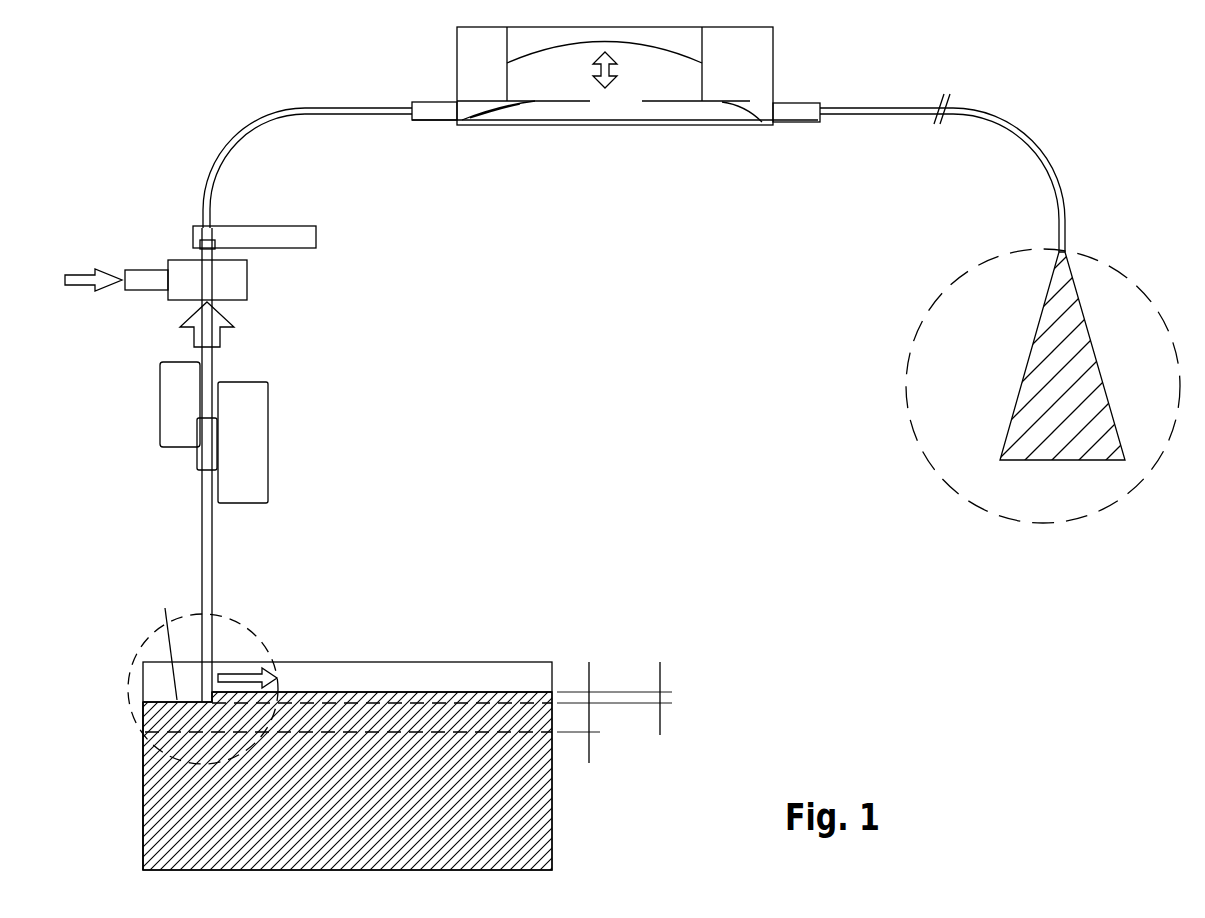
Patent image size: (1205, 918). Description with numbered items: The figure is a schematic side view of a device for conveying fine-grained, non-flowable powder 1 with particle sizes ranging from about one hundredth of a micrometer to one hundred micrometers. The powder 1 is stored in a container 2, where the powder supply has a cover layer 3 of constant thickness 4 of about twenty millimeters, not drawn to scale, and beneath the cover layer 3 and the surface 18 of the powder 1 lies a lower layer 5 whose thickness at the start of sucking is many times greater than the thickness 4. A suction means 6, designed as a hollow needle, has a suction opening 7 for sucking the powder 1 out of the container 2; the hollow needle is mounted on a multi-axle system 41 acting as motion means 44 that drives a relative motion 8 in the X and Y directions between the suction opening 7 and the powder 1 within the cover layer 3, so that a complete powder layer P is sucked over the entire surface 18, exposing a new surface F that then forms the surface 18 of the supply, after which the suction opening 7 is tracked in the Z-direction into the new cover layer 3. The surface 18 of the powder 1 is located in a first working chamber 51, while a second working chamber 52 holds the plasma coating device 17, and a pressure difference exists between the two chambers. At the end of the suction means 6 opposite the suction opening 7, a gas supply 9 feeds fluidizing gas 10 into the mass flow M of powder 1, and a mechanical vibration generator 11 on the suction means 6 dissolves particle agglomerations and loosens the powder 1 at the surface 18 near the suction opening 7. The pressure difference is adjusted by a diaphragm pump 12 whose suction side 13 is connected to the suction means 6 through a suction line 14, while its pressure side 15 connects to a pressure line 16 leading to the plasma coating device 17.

The powder 1 is at (540, 810).
The container 2 is at (552, 845).
The cover layer 3 is at (415, 690).
The thickness 4 is at (590, 720).
The lower layer 5 is at (155, 810).
The suction means 6 is at (205, 543).
The suction opening 7 is at (145, 697).
The relative motion 8 is at (270, 668).
The gas supply 9 is at (183, 270).
The fluidizing gas 10 is at (77, 290).
The mechanical vibration generator 11 is at (180, 405).
The diaphragm pump 12 is at (614, 125).
The suction side 13 is at (437, 118).
The suction line 14 is at (262, 133).
The pressure side 15 is at (797, 122).
The pressure line 16 is at (878, 114).
The plasma coating device 17 is at (1035, 378).
The surface 18 is at (338, 690).
The multi-axle system 41 is at (255, 410).
The motion means 44 is at (300, 238).
The first working chamber 51 is at (150, 635).
The second working chamber 52 is at (935, 302).
The new surface F is at (165, 641).
The mass flow M is at (222, 338).
The powder layer P is at (660, 703).